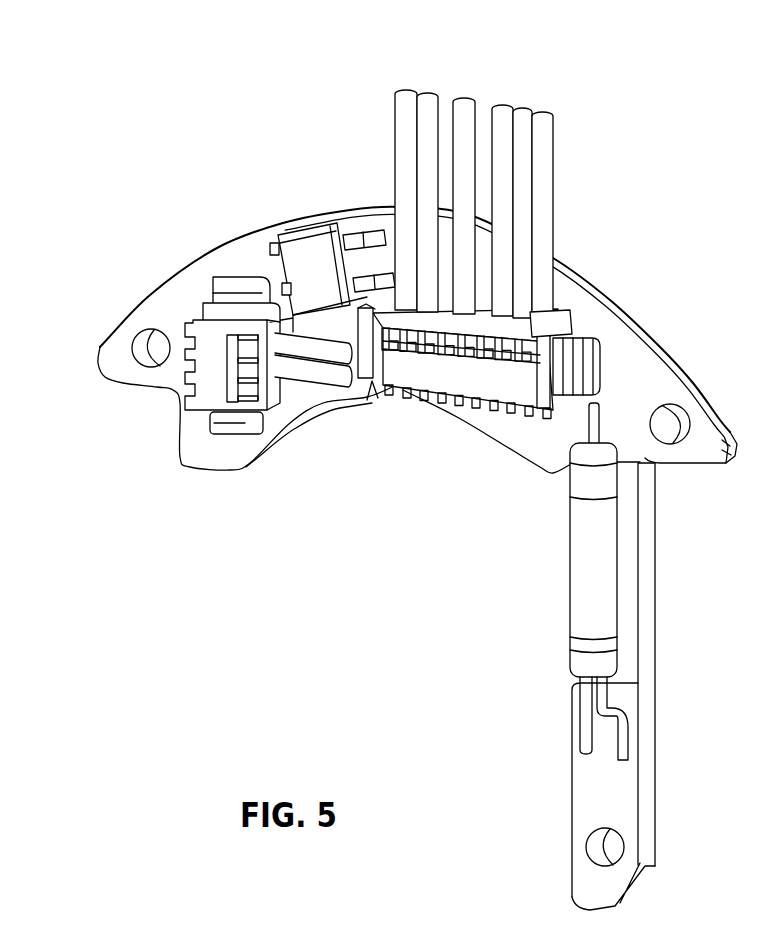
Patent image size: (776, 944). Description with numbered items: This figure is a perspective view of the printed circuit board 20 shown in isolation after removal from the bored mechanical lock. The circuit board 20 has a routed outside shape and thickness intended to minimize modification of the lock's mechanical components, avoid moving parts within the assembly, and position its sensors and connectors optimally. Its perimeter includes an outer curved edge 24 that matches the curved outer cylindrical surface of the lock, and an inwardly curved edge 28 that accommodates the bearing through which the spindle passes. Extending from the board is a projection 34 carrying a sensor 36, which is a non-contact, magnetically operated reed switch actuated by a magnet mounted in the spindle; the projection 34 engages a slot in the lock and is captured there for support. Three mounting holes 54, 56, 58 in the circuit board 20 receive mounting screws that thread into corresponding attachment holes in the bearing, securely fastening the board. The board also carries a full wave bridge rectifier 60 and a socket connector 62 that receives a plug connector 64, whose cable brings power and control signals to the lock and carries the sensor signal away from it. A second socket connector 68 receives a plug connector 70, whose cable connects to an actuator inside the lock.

The printed circuit board 20 is at (637, 372).
The outer curved edge 24 is at (612, 296).
The inwardly curved edge 28 is at (273, 442).
The projection 34 is at (625, 777).
The sensor 36 is at (585, 588).
The mounting hole 54 is at (150, 340).
The mounting hole 56 is at (681, 413).
The mounting hole 58 is at (590, 843).
The full wave bridge rectifier 60 is at (300, 253).
The socket connector 62 is at (475, 375).
The plug connector 64 is at (562, 327).
The socket connector 68 is at (193, 392).
The plug connector 70 is at (307, 402).